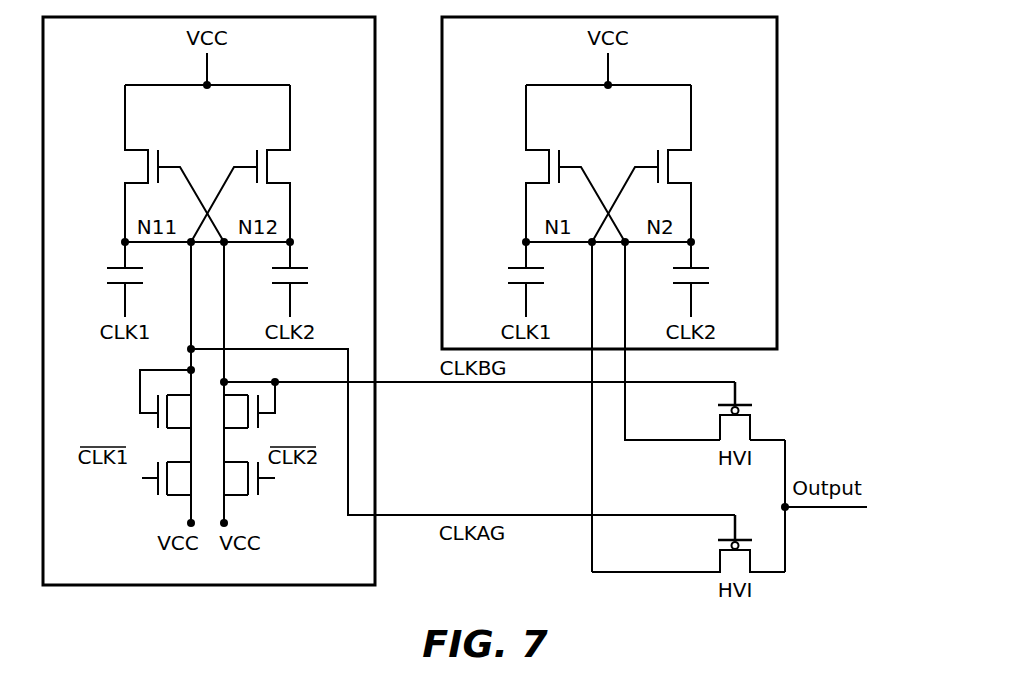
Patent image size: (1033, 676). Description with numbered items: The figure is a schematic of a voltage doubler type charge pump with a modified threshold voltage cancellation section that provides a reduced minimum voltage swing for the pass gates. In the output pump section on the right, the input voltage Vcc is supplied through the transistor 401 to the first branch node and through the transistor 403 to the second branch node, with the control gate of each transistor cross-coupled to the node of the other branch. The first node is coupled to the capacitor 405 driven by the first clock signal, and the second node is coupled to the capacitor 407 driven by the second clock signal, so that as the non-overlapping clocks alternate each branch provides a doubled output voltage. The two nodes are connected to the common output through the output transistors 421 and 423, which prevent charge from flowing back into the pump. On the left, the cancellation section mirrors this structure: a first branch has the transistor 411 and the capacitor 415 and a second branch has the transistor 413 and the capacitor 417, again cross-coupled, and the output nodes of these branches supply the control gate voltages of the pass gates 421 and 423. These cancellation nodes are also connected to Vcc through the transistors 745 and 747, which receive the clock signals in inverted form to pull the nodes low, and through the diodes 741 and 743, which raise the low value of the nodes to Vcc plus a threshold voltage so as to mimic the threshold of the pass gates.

The transistor 401 is at (534, 149).
The transistor 403 is at (683, 149).
The capacitor 405 is at (524, 263).
The capacitor 407 is at (693, 263).
The transistor 411 is at (133, 149).
The transistor 413 is at (282, 149).
The capacitor 415 is at (123, 263).
The capacitor 417 is at (292, 263).
The output transistor 421 is at (754, 562).
The output transistor 423 is at (753, 428).
The diode 741 is at (155, 426).
The diode 743 is at (262, 426).
The transistor 745 is at (155, 496).
The transistor 747 is at (262, 491).